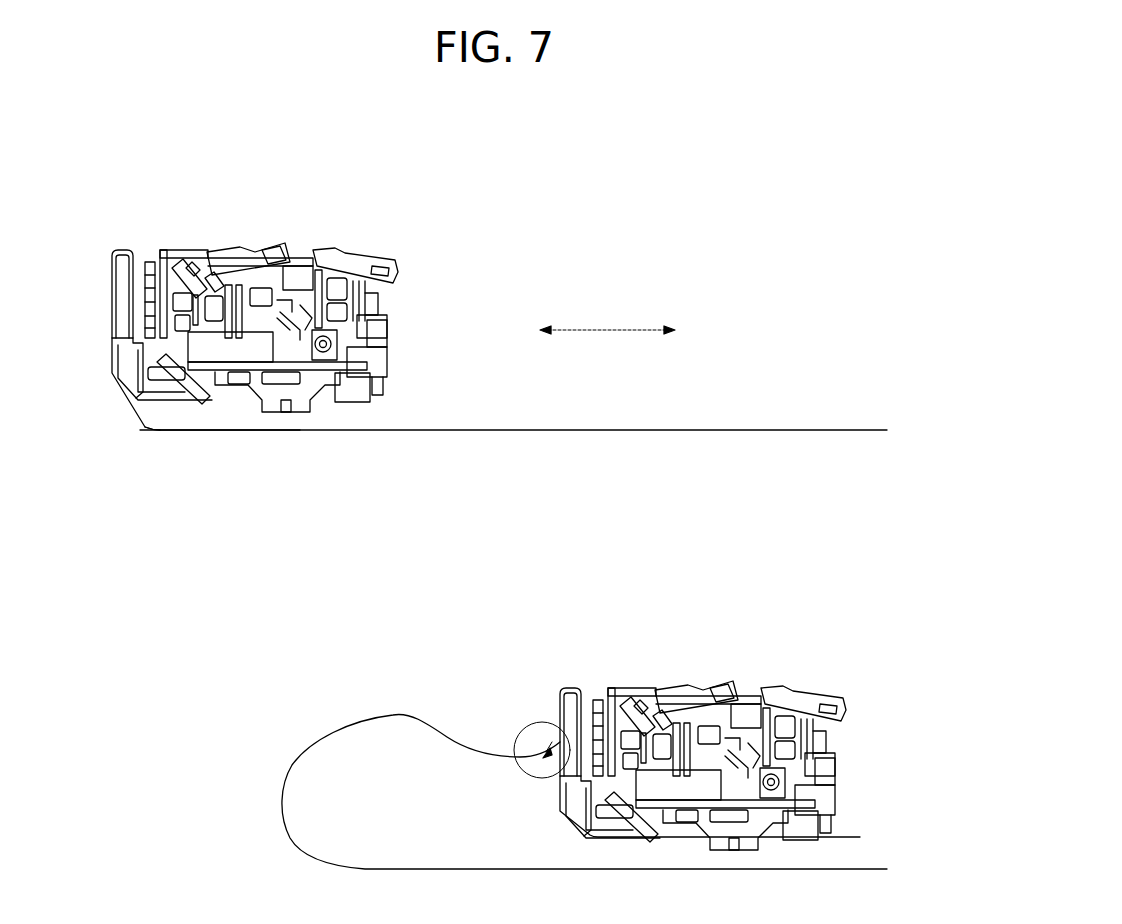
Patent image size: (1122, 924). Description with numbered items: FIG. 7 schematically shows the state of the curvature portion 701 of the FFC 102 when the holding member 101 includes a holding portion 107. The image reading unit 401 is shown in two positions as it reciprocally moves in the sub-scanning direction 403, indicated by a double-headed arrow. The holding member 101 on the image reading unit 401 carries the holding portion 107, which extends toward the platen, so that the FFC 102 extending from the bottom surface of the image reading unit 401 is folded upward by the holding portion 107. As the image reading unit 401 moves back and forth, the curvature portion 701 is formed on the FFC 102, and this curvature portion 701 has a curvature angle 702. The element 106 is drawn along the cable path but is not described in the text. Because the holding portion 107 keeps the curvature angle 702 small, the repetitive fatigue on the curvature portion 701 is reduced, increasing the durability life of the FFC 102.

The image reading unit 401 is at (336, 212).
The holding portion 107 is at (110, 283).
The holding member 101 is at (110, 364).
The FFC 102 is at (547, 432).
The sub-scanning direction 403 is at (607, 330).
The sheet / carpet member 106 is at (143, 420).
The curvature portion 701 is at (530, 727).
The curvature angle 702 is at (537, 765).